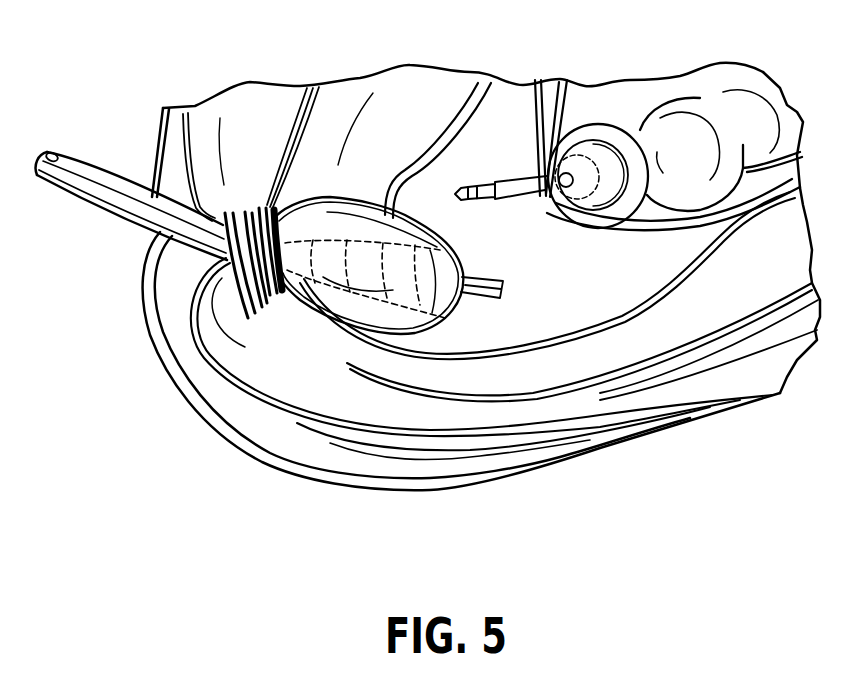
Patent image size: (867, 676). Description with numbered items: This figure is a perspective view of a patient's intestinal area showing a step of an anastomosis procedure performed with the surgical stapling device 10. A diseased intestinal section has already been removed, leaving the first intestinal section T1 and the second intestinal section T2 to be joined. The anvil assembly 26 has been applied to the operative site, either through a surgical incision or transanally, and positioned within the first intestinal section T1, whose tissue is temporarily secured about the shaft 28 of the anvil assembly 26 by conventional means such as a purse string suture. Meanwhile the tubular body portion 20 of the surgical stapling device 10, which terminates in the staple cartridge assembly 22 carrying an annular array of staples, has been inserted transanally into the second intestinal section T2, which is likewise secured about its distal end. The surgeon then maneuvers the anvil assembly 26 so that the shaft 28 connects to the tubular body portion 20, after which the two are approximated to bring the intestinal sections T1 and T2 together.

The surgical stapling device 10 is at (77, 152).
The tubular body portion 20 is at (102, 197).
The staple cartridge assembly 22 is at (455, 313).
The anvil assembly 26 is at (516, 170).
The shaft 28 is at (491, 190).
The first intestinal section T1 is at (663, 120).
The second intestinal section T2 is at (307, 225).